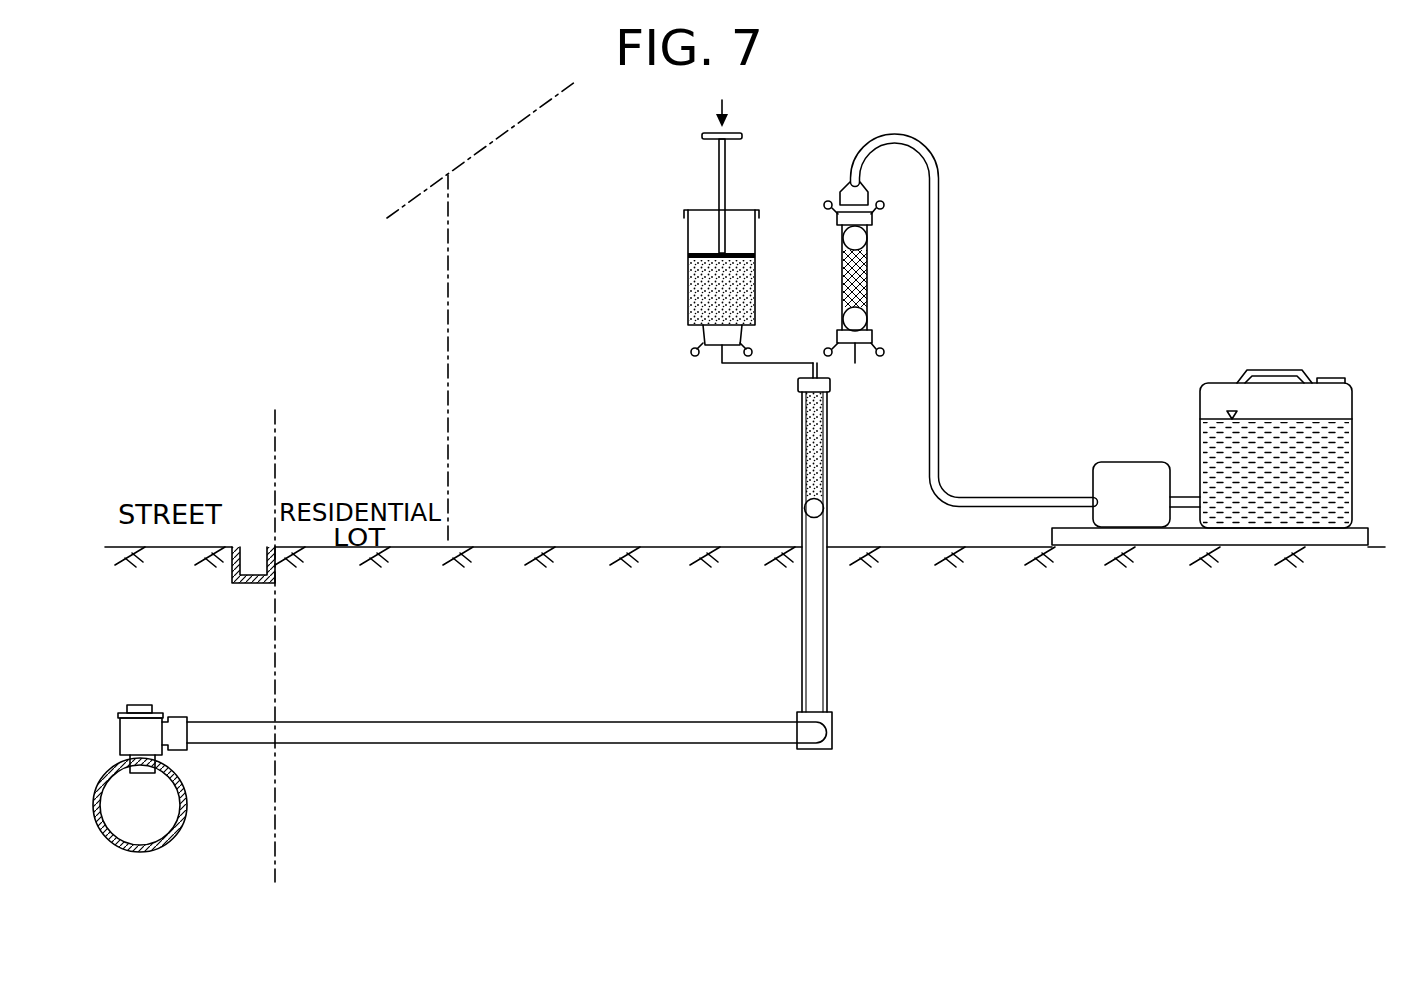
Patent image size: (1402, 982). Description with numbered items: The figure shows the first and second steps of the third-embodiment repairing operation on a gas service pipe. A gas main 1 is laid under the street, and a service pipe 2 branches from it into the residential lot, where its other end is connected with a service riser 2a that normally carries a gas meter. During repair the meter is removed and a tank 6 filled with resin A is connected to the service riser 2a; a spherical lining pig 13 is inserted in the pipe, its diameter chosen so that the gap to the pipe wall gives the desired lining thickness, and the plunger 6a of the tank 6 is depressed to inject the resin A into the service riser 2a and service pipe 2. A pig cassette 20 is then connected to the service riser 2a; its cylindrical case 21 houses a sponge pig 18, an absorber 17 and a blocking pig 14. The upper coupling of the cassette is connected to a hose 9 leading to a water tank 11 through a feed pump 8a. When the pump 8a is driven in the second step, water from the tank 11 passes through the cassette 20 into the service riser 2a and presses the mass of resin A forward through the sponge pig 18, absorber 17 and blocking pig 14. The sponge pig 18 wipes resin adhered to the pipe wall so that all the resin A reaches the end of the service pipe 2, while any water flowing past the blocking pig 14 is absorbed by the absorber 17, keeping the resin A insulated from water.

The gas main 1 is at (133, 850).
The service pipe 2 is at (421, 743).
The service riser 2a is at (801, 628).
The tank 6 is at (682, 269).
The plunger 6a is at (718, 252).
The feed pump 8a is at (1137, 515).
The hose 9 is at (938, 160).
The water tank 11 is at (1225, 390).
The lining pig 13 is at (805, 507).
The blocking pig 14 is at (860, 237).
The absorber 17 is at (867, 272).
The sponge pig 18 is at (867, 320).
The pig cassette 20 is at (878, 290).
The cylindrical case 21 is at (842, 267).
The resin A is at (804, 418).